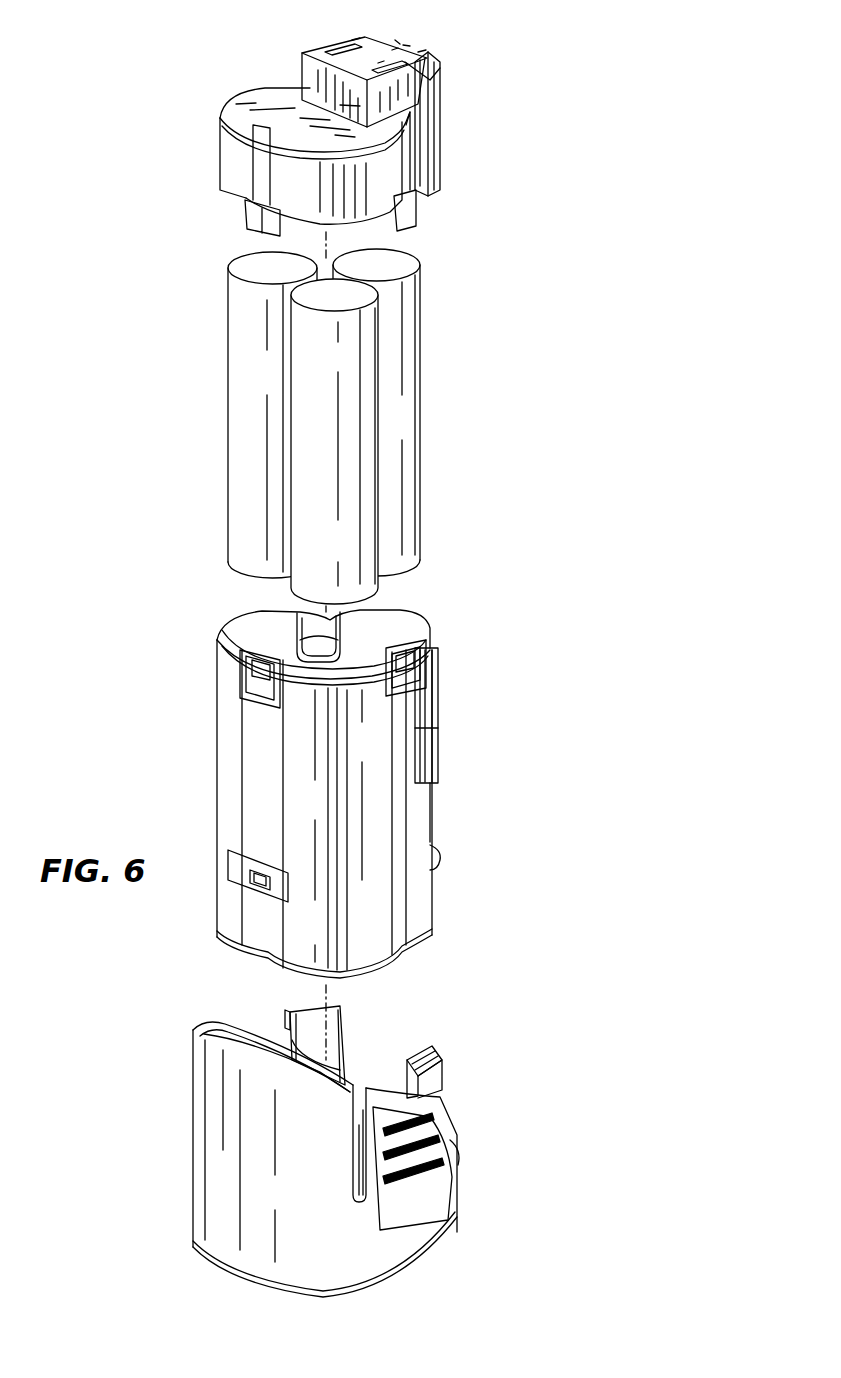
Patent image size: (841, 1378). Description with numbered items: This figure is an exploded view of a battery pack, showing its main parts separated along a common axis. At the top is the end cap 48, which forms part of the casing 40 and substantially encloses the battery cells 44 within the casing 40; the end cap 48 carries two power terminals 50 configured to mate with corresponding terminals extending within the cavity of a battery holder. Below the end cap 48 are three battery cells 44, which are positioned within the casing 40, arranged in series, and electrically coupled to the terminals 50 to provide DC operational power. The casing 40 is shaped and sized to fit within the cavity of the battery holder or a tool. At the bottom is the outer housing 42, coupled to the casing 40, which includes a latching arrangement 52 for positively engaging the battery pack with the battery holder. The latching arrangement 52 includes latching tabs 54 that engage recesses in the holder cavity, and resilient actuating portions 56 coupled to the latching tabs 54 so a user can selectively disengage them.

The casing 40 is at (380, 812).
The outer housing 42 is at (215, 1135).
The battery cells 44 is at (404, 414).
The end cap 48 is at (236, 152).
The power terminals 50 is at (405, 60).
The latching arrangement 52 is at (470, 1097).
The latching tabs 54 is at (432, 1057).
The resilient actuating portions 56 is at (422, 1195).